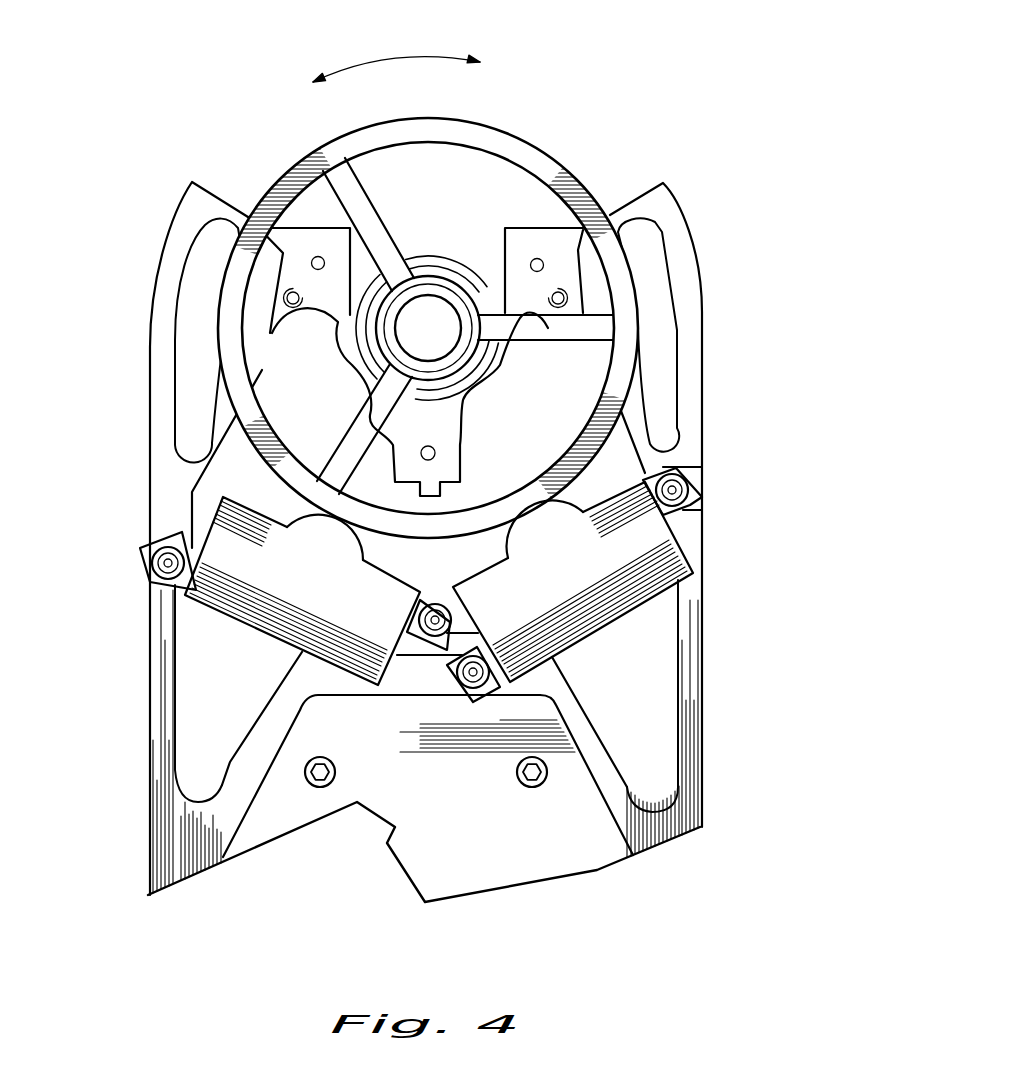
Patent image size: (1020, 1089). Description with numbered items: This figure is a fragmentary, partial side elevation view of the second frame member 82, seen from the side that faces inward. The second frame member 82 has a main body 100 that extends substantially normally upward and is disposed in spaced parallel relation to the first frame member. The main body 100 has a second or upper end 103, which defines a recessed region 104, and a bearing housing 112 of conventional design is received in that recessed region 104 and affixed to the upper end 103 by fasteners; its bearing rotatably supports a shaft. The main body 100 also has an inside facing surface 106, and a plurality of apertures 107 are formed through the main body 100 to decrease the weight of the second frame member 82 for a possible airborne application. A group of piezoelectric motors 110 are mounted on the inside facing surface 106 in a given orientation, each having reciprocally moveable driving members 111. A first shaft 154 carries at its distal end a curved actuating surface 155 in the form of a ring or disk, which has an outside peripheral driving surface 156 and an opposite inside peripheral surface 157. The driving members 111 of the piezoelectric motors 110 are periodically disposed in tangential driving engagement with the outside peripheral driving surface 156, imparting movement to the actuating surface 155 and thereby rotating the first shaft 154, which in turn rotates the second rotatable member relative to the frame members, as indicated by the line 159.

The second frame member 82 is at (682, 810).
The main body 100 is at (688, 633).
The second or upper end 103 is at (660, 212).
The recessed region 104 is at (413, 253).
The inside facing surface 106 is at (690, 742).
The apertures 107 is at (653, 340).
The piezoelectric motors 110 is at (322, 600).
The driving members 111 is at (552, 517).
The bearing housing 112 is at (440, 262).
The first shaft 154 is at (449, 337).
The curved actuating surface 155 is at (512, 148).
The outside peripheral driving surface 156 is at (586, 188).
The inside peripheral surface 157 is at (455, 165).
The line indicating rotation 159 is at (392, 55).